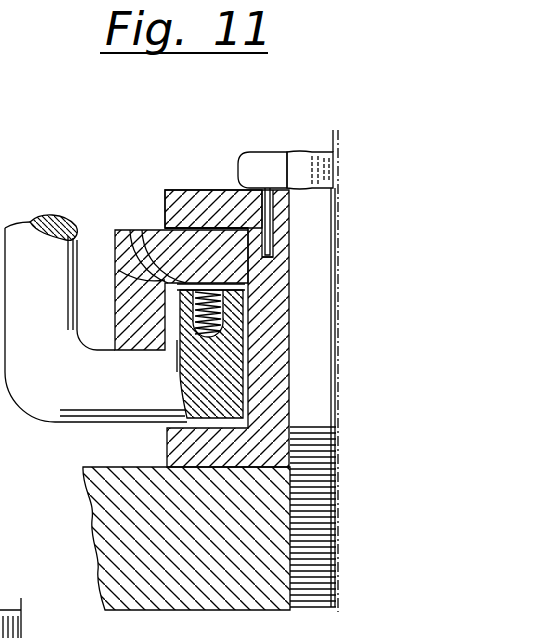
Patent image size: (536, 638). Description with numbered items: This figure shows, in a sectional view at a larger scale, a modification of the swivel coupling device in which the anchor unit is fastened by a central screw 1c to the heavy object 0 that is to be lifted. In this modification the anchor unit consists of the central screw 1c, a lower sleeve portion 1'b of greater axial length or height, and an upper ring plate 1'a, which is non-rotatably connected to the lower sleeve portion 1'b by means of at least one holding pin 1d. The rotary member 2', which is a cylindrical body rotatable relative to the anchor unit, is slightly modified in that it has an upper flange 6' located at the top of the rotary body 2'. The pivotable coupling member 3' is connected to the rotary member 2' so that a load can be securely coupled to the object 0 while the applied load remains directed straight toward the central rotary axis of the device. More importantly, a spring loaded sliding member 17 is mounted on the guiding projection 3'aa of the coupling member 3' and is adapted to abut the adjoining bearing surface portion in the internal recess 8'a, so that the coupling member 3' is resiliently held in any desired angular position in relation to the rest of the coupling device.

The upper ring plate 1'a is at (212, 181).
The holding pin 1d is at (250, 197).
The central screw 1c is at (283, 151).
The upper flange 6' is at (192, 203).
The rotary member 2' is at (174, 274).
The internal recess 8'a is at (135, 244).
The spring loaded sliding member 17 is at (118, 270).
The guiding projection 3'aa is at (257, 354).
The lower sleeve portion 1'b is at (246, 328).
The coupling member 3' is at (96, 318).
The heavy object 0 is at (108, 521).